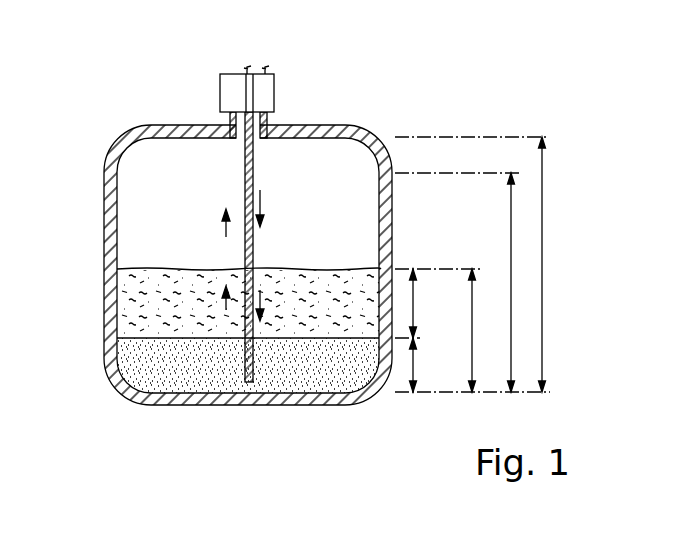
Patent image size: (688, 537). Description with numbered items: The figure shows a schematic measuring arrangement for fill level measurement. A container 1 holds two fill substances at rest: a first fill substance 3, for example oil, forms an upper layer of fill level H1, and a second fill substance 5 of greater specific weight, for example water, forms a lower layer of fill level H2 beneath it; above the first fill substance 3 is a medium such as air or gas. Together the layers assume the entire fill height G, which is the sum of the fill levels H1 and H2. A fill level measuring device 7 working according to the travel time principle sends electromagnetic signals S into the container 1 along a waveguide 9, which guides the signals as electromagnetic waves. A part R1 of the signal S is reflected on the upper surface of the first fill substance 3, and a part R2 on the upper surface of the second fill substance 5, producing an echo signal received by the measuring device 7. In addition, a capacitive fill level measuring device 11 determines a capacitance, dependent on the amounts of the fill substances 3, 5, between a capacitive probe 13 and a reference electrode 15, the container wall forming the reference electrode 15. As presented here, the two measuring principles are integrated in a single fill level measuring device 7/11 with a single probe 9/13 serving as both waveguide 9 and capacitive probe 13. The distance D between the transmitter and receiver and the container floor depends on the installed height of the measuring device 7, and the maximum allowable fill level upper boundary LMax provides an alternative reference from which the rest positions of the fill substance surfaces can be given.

The container 1 is at (110, 200).
The first fill substance 3 is at (127, 299).
The second fill substance 5 is at (118, 366).
The fill level measuring device 7 is at (233, 82).
The capacitive fill level measuring device 11 is at (256, 70).
The waveguide 9 is at (244, 118).
The capacitive probe 13 is at (263, 125).
The reference electrode 15 is at (127, 338).
The reflected signal part R1 is at (229, 260).
The reflected signal part R2 is at (229, 330).
The electromagnetic signals S is at (255, 198).
The distance between transmitter/receiver and container floor D is at (542, 253).
The maximum allowable fill level upper boundary LMax is at (510, 225).
The entire fill height G is at (482, 330).
The fill level of the first fill substance H1 is at (432, 303).
The fill level of the second fill substance H2 is at (432, 365).